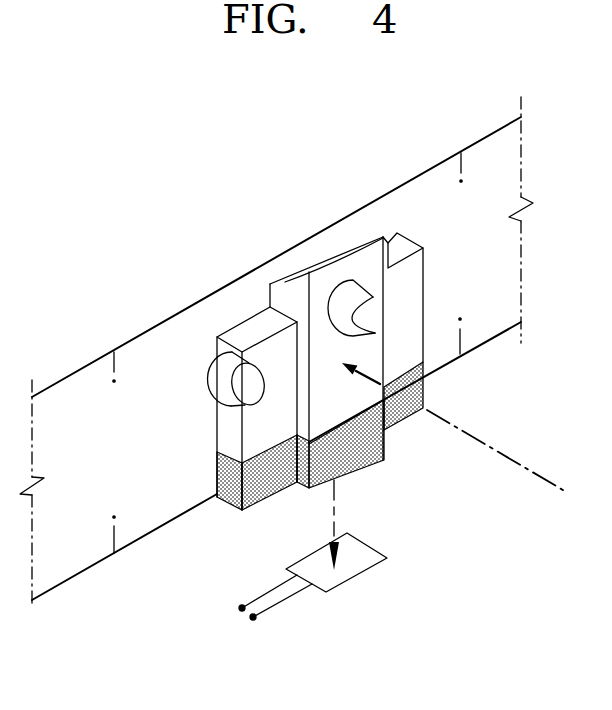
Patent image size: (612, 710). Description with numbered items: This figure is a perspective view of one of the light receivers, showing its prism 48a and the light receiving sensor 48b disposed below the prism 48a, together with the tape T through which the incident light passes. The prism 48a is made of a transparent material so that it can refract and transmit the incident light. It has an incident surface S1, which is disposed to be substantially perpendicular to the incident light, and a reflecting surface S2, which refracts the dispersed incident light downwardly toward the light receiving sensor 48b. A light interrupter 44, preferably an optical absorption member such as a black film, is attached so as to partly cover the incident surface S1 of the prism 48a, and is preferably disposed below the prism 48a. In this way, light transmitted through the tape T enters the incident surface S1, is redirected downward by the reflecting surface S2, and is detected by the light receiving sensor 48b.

The tape T is at (502, 158).
The light interrupter 44 is at (222, 508).
The prism 48a is at (250, 291).
The light receiving sensor 48b is at (355, 562).
The incident surface S1 is at (368, 357).
The reflecting surface S2 is at (355, 247).